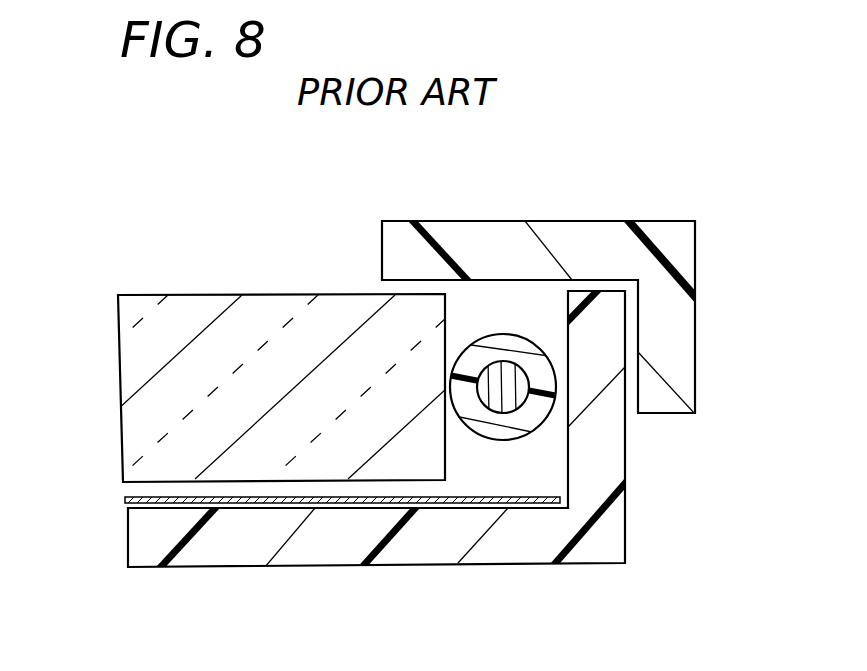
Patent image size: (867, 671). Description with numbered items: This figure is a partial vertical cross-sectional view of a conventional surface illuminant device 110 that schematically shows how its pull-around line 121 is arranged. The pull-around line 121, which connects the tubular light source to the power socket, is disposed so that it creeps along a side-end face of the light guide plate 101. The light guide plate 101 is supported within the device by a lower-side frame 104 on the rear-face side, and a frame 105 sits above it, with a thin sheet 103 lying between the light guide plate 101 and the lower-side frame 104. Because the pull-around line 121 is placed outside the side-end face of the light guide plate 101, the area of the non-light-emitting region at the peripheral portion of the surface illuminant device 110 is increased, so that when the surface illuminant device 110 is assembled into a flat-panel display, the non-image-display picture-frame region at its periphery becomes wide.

The surface illuminant device 110 is at (410, 152).
The light guide plate 101 is at (187, 312).
The thin sheet 103 is at (127, 495).
The lower-side frame 104 is at (542, 542).
The frame 105 is at (663, 400).
The pull-around line 121 is at (477, 357).